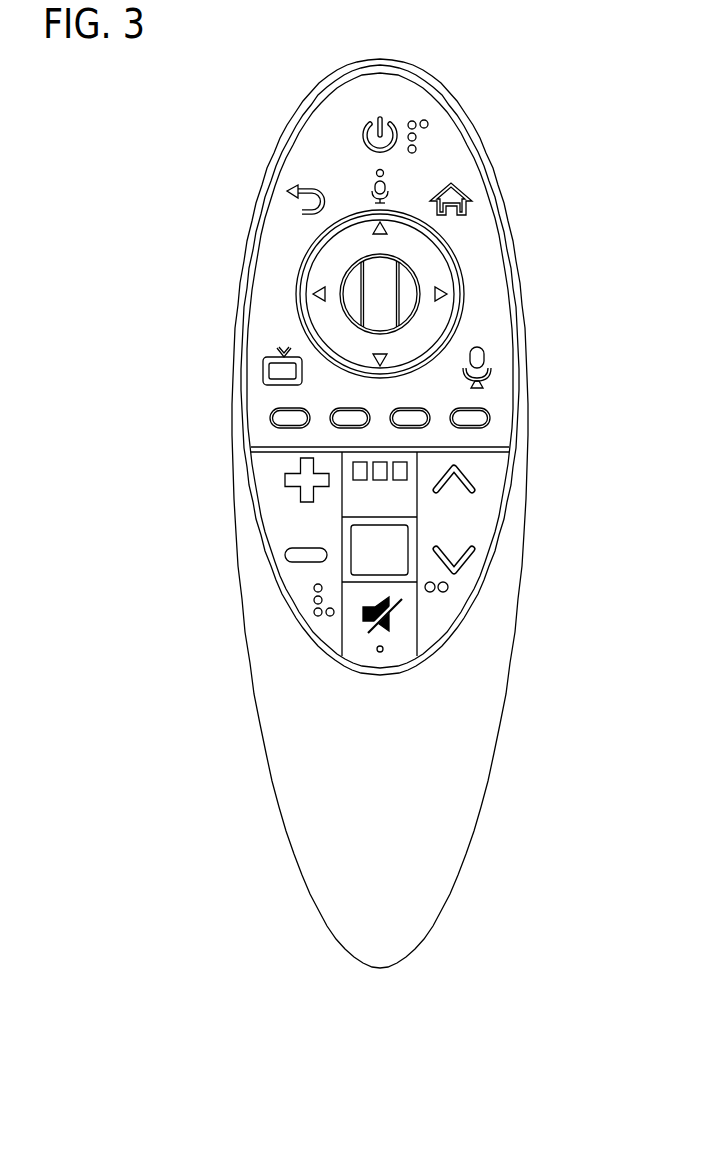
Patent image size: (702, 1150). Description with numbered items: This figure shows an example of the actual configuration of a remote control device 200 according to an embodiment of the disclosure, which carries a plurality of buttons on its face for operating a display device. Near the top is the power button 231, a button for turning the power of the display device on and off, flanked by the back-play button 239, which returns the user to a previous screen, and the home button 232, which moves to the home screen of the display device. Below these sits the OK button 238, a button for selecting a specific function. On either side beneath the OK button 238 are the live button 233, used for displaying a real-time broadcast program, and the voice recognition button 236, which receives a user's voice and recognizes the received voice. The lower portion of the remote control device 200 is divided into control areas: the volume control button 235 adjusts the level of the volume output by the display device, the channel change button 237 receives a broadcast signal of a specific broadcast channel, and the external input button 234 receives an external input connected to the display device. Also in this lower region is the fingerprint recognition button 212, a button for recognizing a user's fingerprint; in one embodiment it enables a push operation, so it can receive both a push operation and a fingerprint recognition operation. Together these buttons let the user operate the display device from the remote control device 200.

The remote control device 200 is at (187, 96).
The power button 231 is at (393, 128).
The home button 232 is at (463, 187).
The back-play button 239 is at (292, 200).
The OK button 238 is at (348, 280).
The live button 233 is at (265, 371).
The voice recognition button 236 is at (487, 362).
The external input button 234 is at (386, 462).
The volume control button 235 is at (278, 518).
The channel change button 237 is at (485, 518).
The fingerprint recognition button 212 is at (393, 573).